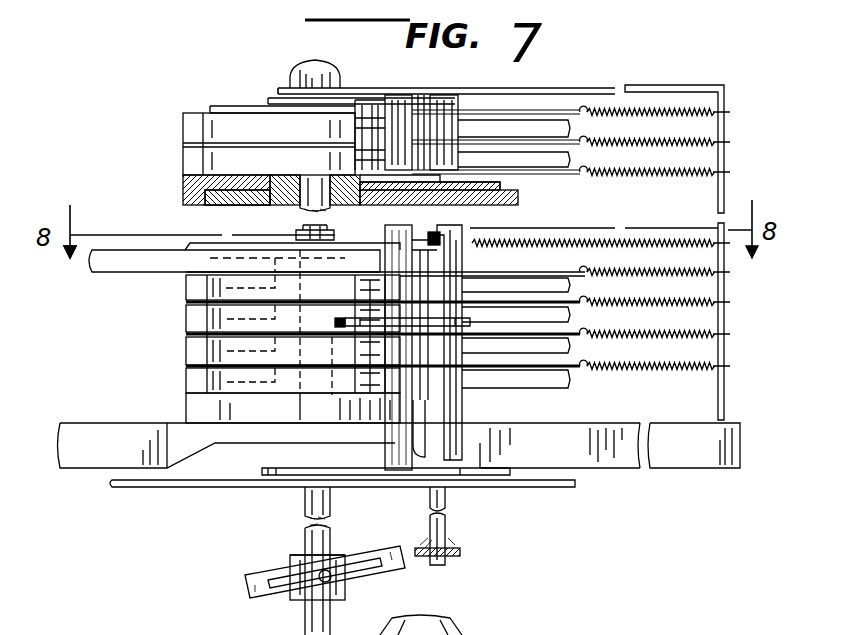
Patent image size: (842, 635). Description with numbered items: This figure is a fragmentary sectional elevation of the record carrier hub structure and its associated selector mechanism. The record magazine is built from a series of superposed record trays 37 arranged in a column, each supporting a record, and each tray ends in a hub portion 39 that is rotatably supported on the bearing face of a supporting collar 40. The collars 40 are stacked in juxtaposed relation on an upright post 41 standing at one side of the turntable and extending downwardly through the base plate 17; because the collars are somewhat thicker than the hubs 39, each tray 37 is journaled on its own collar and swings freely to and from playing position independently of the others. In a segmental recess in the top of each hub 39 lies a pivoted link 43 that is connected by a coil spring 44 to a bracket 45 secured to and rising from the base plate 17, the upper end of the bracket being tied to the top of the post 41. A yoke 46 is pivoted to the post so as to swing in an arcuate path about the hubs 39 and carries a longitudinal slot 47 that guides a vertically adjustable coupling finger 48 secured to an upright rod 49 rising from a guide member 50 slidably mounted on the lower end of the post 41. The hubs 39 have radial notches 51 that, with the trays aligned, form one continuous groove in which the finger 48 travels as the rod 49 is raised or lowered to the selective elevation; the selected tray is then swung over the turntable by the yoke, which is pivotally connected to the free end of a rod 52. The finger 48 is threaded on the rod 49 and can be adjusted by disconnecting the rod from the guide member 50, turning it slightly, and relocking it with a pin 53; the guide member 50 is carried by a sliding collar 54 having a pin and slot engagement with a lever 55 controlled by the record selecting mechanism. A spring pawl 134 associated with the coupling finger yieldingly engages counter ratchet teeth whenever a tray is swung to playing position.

The base plate 17 is at (555, 443).
The record tray 37 is at (515, 128).
The hub portion 39 is at (183, 188).
The supporting collar 40 is at (245, 200).
The post 41 is at (300, 204).
The pivoted link 43 is at (580, 176).
The coil spring 44 is at (637, 300).
The bracket 45 is at (718, 226).
The yoke 46 is at (462, 412).
The longitudinal slot 47 is at (420, 345).
The coupling finger 48 is at (472, 321).
The upright rod 49 is at (442, 240).
The guide member 50 is at (425, 558).
The radial notch 51 is at (205, 318).
The rod 52 is at (235, 488).
The pin 53 is at (447, 548).
The sliding collar 54 is at (345, 580).
The lever 55 is at (283, 600).
The spring pawl 134 is at (335, 322).